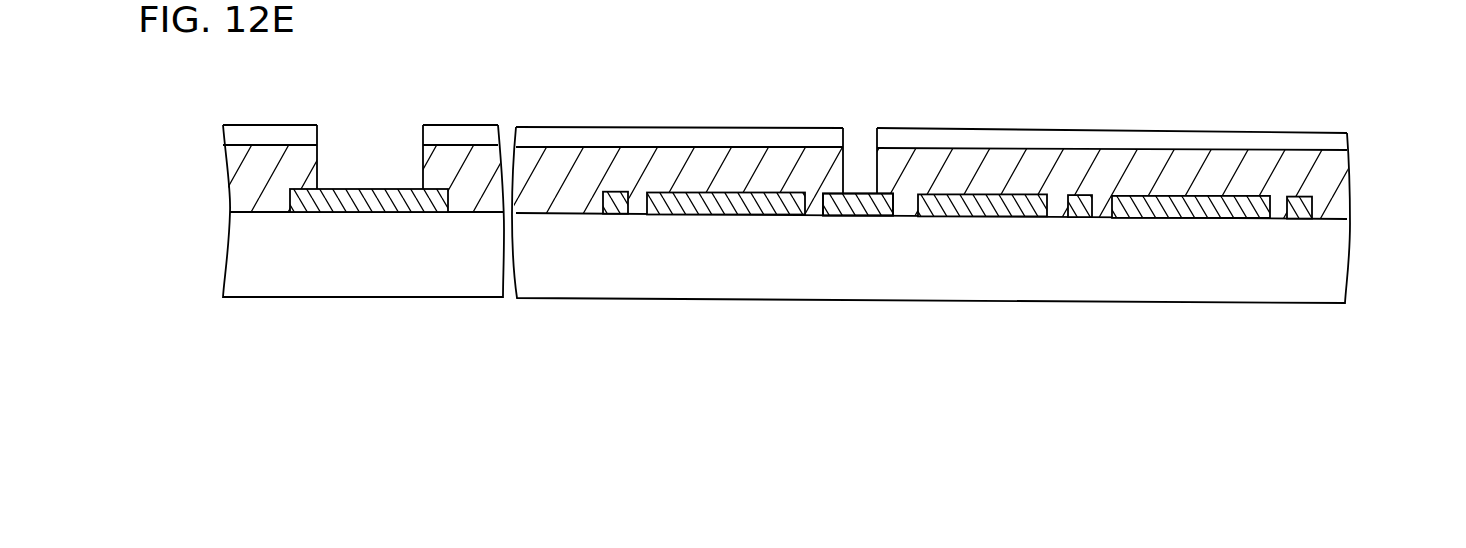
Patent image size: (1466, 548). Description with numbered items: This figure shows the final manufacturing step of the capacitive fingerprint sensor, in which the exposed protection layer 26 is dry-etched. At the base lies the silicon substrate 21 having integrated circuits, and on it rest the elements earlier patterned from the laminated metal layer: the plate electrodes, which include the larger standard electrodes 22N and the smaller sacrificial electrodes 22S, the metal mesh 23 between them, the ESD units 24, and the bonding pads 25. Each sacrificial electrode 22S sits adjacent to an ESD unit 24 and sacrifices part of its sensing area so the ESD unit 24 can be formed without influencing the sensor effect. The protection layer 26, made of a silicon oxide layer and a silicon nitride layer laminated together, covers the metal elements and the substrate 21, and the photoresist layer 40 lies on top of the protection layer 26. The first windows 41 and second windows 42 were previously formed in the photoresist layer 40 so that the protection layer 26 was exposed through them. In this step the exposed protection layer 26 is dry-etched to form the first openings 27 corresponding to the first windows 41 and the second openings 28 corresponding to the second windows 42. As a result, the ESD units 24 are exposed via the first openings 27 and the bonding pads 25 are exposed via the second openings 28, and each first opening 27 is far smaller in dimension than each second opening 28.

The silicon substrate 21 is at (1335, 237).
The standard electrodes 22N is at (730, 217).
The sacrificial electrodes 22S is at (977, 218).
The metal mesh 23 is at (623, 215).
The ESD units 24 is at (883, 218).
The bonding pads 25 is at (373, 217).
The protection layer 26 is at (1342, 183).
The first openings 27 is at (860, 161).
The second openings 28 is at (370, 157).
The photoresist layer 40 is at (1338, 146).
The first windows 41 is at (860, 137).
The second windows 42 is at (383, 132).